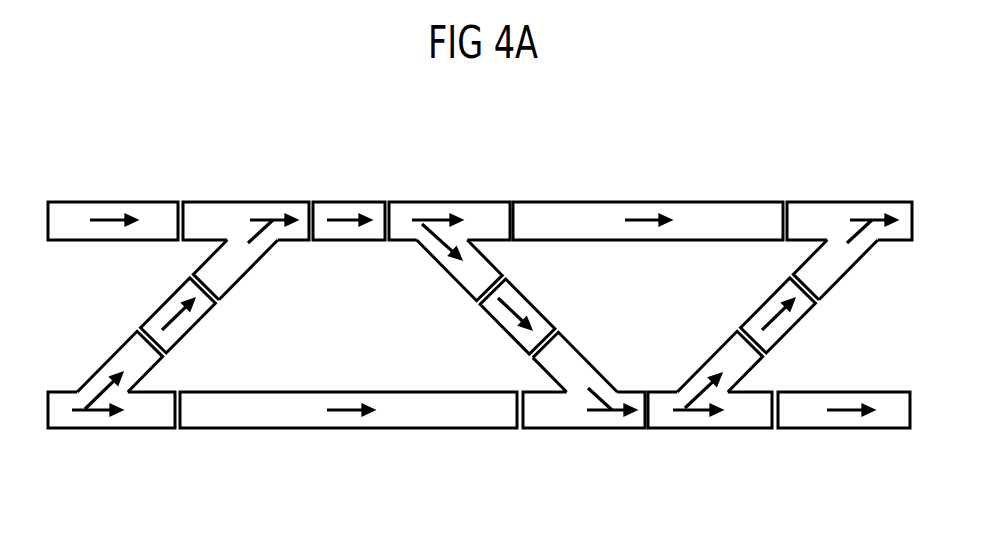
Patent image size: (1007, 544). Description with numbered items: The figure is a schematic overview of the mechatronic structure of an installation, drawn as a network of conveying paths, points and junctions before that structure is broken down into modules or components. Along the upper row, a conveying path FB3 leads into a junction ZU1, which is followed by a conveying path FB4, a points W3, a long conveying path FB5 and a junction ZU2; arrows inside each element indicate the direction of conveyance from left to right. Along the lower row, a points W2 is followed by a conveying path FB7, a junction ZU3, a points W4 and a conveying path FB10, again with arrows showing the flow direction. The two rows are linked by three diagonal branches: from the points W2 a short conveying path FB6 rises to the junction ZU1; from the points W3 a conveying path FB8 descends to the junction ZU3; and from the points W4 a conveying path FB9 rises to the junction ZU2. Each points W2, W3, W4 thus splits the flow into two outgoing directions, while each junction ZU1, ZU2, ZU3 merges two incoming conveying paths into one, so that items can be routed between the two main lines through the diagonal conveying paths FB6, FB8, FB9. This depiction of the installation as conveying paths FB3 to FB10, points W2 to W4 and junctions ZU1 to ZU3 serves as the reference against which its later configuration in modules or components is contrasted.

The conveying path FB3 is at (77, 202).
The junction ZU1 is at (221, 202).
The conveying path FB4 is at (354, 202).
The points W3 is at (475, 202).
The conveying path FB5 is at (600, 202).
The junction ZU2 is at (820, 202).
The conveying path FB6 is at (159, 307).
The points W2 is at (110, 349).
The conveying path FB7 is at (284, 430).
The conveying path FB8 is at (534, 302).
The junction ZU3 is at (577, 430).
The points W4 is at (712, 430).
The conveying path FB9 is at (759, 302).
The conveying path FB10 is at (823, 430).